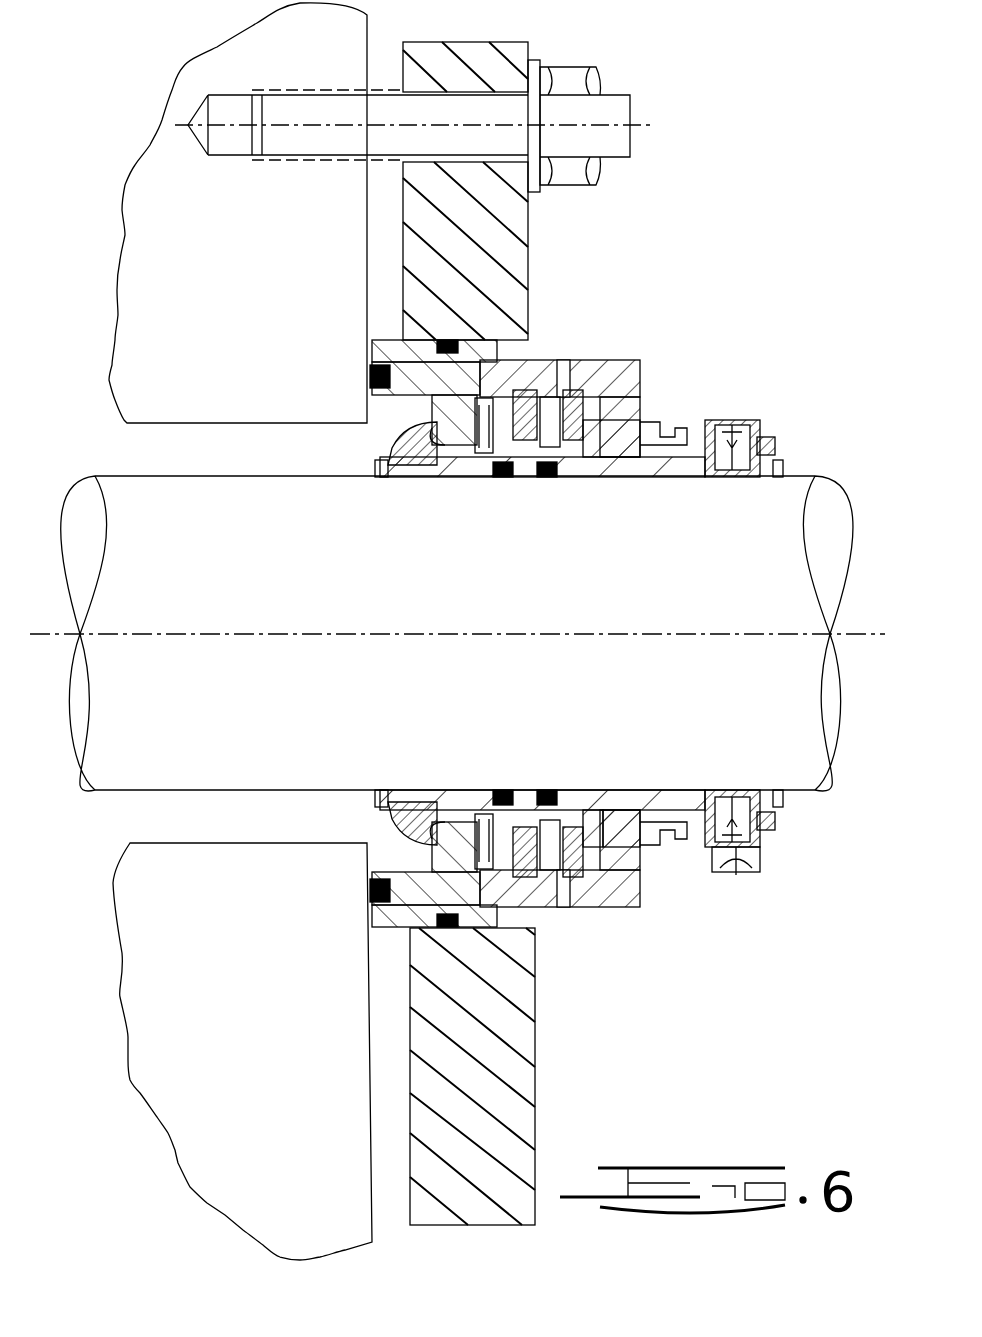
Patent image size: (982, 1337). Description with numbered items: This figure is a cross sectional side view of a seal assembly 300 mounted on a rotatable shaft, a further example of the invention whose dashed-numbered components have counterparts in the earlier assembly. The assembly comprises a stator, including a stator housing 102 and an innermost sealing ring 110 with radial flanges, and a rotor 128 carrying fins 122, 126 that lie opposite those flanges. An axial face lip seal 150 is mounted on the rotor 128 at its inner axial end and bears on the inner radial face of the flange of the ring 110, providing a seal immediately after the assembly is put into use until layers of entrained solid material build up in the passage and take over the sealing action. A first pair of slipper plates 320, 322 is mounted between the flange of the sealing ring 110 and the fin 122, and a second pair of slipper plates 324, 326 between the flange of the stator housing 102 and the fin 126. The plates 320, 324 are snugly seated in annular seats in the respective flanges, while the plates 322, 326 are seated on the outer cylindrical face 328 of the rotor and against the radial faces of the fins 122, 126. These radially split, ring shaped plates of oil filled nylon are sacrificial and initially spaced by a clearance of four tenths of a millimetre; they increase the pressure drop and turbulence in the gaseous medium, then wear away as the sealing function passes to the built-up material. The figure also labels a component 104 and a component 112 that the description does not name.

The stator housing 102 is at (380, 330).
The seal assembly 300 is at (640, 340).
The axial face lip seal 150 is at (387, 476).
The slipper plate 320 is at (457, 477).
The slipper plate 322 is at (475, 477).
The shaft 112 is at (580, 477).
The slipper plate 324 is at (628, 477).
The fin 126 is at (598, 808).
The rotor 128 is at (668, 808).
The sealing ring 110 is at (455, 808).
The fin 122 is at (528, 808).
The slipper plate 326 is at (618, 808).
The outer cylindrical face 328 is at (683, 808).
The flange 104 is at (535, 1003).